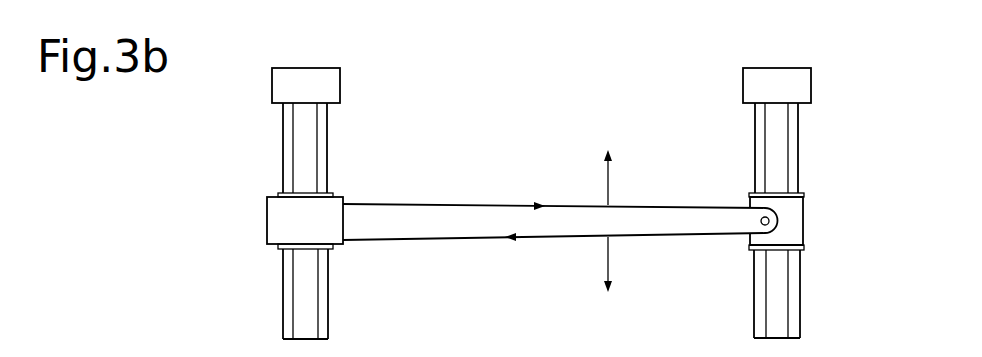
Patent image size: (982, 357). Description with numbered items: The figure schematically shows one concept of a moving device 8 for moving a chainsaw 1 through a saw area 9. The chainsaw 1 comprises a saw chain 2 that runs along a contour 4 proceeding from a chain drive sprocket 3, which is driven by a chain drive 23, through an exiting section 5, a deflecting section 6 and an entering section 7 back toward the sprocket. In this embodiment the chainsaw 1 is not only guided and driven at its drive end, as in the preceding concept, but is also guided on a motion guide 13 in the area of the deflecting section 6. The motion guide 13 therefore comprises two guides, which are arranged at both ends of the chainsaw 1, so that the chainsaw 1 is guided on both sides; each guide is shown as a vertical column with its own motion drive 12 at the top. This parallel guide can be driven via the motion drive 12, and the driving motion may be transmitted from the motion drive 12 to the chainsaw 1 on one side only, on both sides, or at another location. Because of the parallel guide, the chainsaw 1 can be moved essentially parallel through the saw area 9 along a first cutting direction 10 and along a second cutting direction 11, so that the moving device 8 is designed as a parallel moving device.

The chainsaw 1 is at (560, 203).
The saw chain 2 is at (560, 203).
The chain drive sprocket 3 is at (322, 215).
The contour 4 is at (560, 203).
The exiting section 5 is at (451, 203).
The deflecting section 6 is at (761, 229).
The entering section 7 is at (526, 238).
The moving device 8 is at (549, 203).
The saw area 9 is at (560, 203).
The first cutting direction 10 is at (608, 262).
The second cutting direction 11 is at (609, 178).
The motion drive 12 is at (293, 97).
The motion guide 13 is at (293, 270).
The chain drive 23 is at (351, 175).